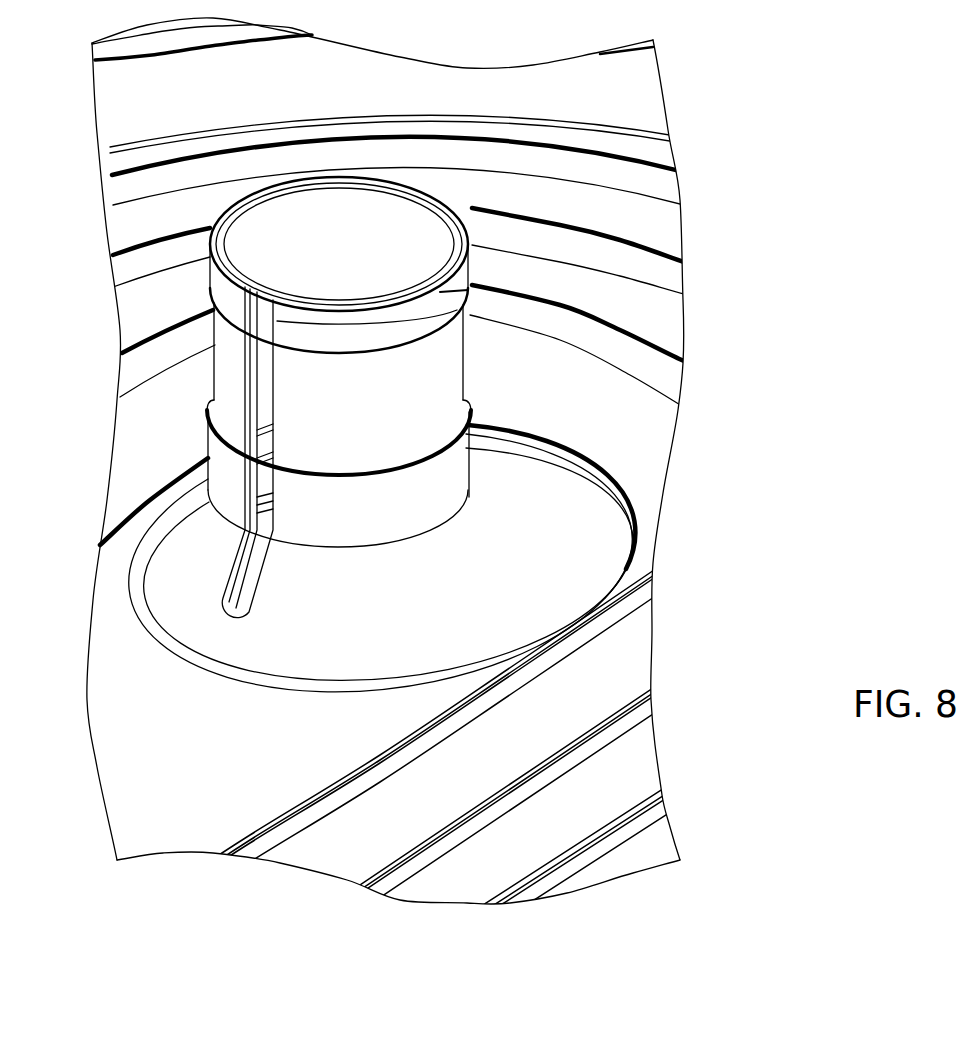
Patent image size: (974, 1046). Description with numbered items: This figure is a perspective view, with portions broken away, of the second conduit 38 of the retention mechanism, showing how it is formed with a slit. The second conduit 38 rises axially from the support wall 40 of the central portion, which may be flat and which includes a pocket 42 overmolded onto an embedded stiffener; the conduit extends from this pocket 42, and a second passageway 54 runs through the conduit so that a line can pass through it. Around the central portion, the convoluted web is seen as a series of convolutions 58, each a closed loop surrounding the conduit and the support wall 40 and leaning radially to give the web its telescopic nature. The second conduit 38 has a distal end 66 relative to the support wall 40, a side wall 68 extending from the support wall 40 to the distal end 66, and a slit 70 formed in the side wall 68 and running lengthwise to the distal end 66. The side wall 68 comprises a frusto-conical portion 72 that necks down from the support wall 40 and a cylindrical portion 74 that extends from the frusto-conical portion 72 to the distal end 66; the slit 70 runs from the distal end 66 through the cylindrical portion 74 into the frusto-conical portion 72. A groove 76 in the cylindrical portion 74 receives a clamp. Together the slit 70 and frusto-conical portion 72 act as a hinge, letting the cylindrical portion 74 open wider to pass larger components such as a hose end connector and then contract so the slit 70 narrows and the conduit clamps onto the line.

The second conduit 38 is at (534, 394).
The support wall 40 is at (112, 763).
The pocket 42 is at (180, 718).
The second passageway 54 is at (327, 228).
The convolutions 58 is at (527, 673).
The distal end 66 is at (243, 207).
The side wall 68 is at (477, 300).
The slit 70 is at (250, 567).
The frusto-conical portion 72 is at (383, 627).
The cylindrical portion 74 is at (408, 490).
The groove 76 is at (290, 405).